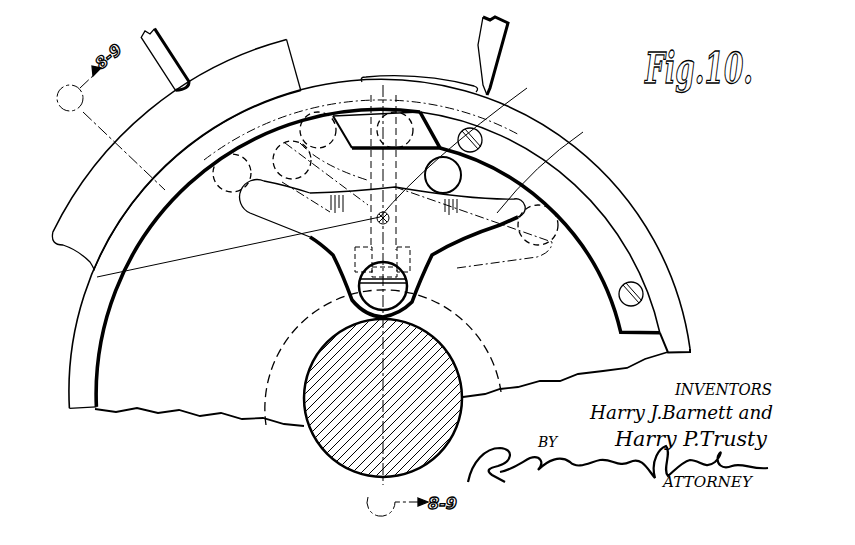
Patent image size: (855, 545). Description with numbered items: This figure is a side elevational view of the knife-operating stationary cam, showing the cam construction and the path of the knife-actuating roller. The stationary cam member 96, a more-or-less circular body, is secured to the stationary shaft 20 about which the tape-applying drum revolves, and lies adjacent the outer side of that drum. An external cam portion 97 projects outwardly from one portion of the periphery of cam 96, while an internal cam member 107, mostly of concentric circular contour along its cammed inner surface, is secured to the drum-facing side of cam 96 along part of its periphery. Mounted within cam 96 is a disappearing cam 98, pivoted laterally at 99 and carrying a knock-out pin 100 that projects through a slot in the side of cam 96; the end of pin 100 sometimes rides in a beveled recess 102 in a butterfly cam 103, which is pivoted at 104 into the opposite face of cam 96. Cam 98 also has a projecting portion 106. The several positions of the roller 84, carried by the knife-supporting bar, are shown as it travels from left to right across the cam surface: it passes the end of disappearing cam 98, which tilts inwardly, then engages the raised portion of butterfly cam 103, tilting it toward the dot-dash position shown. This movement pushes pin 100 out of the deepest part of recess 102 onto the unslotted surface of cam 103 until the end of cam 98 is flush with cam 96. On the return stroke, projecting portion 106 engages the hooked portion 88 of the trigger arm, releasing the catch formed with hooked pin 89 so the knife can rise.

The stationary shaft 20 is at (340, 453).
The roller 84 is at (220, 167).
The hooked portion 88 is at (500, 38).
The hooked pin 89 is at (163, 50).
The stationary cam member 96 is at (100, 347).
The external cam portion 97 is at (83, 195).
The disappearing cam 98 is at (408, 117).
The pivot 99 is at (560, 150).
The knock-out pin 100 is at (93, 275).
The beveled recess 102 is at (447, 172).
The butterfly cam 103 is at (247, 205).
The pivot 104 is at (348, 283).
The projecting portion 106 is at (460, 83).
The internal cam member 107 is at (607, 244).